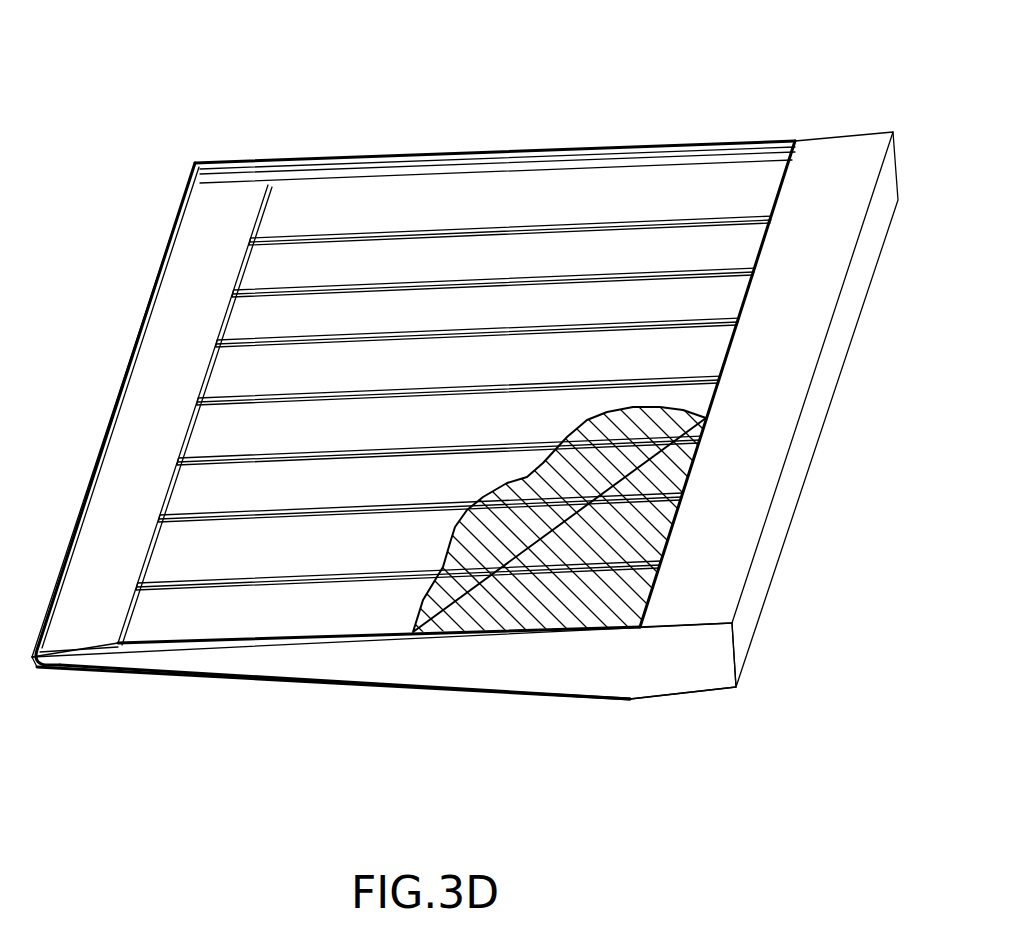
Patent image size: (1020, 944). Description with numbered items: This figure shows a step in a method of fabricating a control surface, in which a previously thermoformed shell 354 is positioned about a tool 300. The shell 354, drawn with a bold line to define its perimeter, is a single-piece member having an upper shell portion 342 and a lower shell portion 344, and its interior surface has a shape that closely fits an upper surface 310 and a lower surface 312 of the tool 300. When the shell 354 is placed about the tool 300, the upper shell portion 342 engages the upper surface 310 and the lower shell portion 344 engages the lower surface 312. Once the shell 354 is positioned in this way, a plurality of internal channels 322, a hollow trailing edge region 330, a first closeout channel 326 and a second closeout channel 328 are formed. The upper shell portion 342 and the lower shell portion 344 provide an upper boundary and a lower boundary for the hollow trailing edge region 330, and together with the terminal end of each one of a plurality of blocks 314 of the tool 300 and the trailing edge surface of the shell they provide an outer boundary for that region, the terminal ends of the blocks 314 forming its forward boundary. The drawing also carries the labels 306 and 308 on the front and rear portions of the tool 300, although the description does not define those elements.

The tool 300 is at (168, 99).
The front wall 306 is at (303, 660).
The rear wall 308 is at (258, 183).
The upper surface 310 is at (539, 313).
The lower surface 312 is at (553, 697).
The blocks 314 is at (415, 185).
The internal channels 322 is at (240, 267).
The first closeout channel 326 is at (171, 619).
The second closeout channel 328 is at (318, 184).
The hollow trailing edge region 330 is at (150, 368).
The upper shell portion 342 is at (535, 538).
The lower shell portion 344 is at (437, 690).
The shell 354 is at (148, 302).